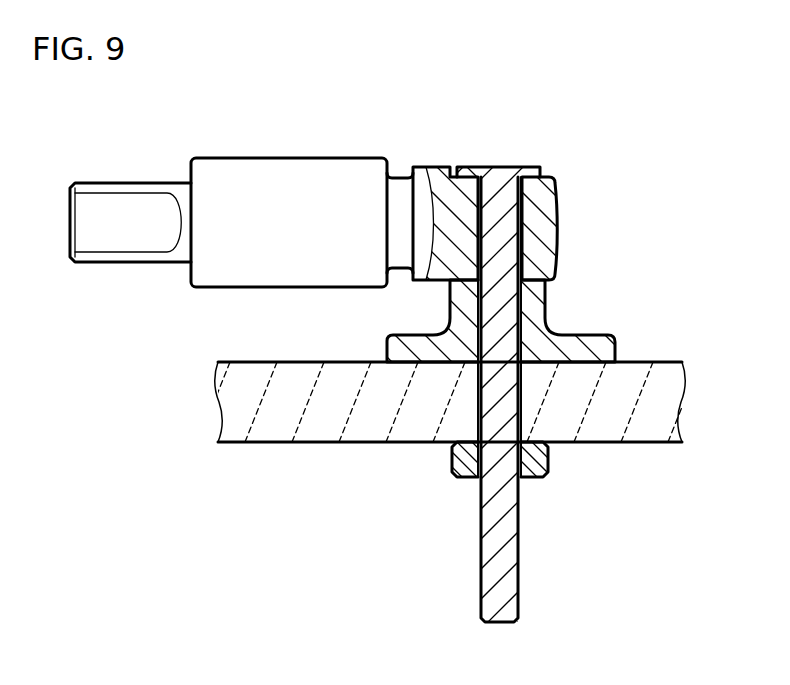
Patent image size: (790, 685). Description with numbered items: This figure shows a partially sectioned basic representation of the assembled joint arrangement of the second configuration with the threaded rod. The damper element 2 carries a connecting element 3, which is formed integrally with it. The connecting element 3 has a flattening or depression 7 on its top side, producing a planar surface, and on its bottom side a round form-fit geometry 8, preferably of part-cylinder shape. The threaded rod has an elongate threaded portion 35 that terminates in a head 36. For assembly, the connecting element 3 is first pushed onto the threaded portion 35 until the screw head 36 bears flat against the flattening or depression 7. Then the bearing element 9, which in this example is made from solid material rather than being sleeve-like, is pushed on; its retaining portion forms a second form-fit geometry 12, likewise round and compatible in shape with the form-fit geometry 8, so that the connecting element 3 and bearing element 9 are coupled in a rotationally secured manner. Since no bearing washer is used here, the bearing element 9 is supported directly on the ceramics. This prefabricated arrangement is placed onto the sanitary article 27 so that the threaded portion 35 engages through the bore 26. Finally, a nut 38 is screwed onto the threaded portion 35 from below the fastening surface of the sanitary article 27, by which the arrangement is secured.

The damper element 2 is at (322, 155).
The connecting element 3 is at (430, 167).
The flattening or depression 7 is at (547, 168).
The form-fit geometry 8 is at (415, 284).
The bearing element 9 is at (552, 307).
The second form-fit geometry 12 is at (451, 283).
The bore 26 is at (523, 413).
The sanitary article 27 is at (662, 373).
The threaded portion 35 is at (503, 492).
The head 36 is at (533, 167).
The nut 38 is at (541, 457).